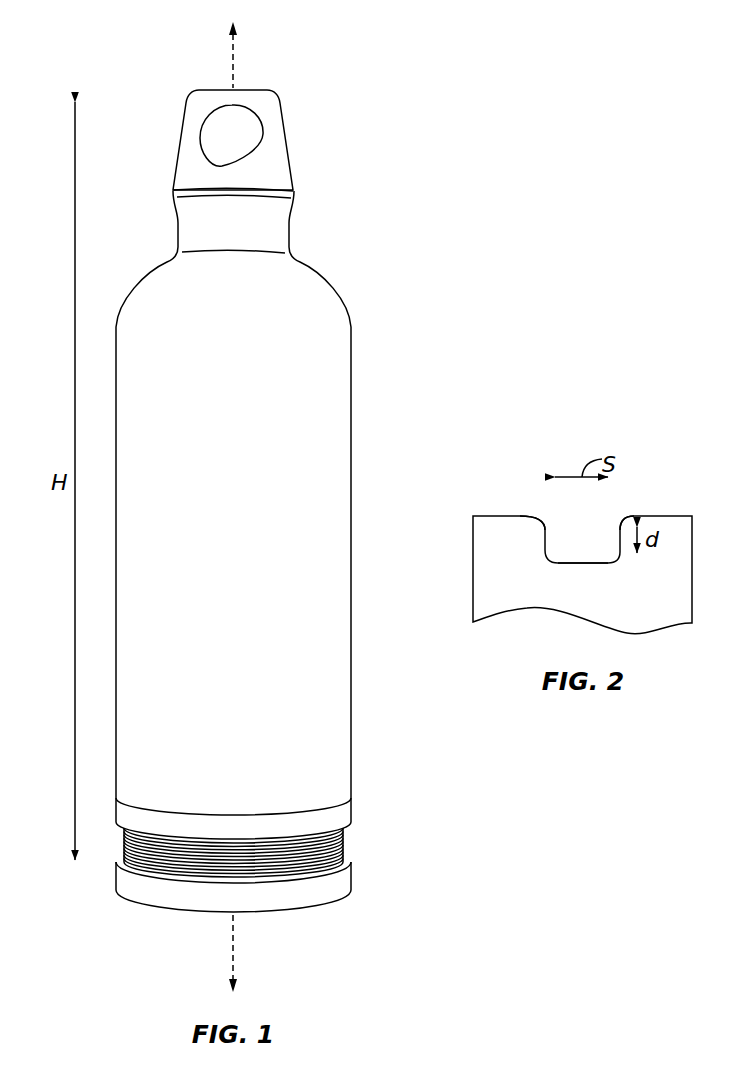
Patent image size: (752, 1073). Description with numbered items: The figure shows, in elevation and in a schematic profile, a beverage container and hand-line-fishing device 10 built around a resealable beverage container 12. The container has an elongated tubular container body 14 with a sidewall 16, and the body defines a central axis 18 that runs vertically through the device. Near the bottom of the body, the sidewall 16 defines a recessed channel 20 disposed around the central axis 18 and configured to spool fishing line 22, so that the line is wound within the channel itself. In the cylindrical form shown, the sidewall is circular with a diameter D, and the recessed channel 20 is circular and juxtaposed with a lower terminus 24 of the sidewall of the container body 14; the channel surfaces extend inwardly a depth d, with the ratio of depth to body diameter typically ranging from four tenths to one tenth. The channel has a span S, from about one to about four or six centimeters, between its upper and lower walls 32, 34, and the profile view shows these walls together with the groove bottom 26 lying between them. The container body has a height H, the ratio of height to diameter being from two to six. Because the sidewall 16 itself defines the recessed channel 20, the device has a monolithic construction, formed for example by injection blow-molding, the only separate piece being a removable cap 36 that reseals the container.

In FIG. 1, the beverage container and hand-line-fishing device 10 is at (239, 507).
In FIG. 1, the resealable beverage container 12 is at (318, 262).
In FIG. 1, the container body 14 is at (271, 562).
In FIG. 1, the sidewall 16 is at (352, 572).
In FIG. 1, the central axis 18 is at (237, 72).
In FIG. 1, the recessed channel 20 is at (230, 869).
In FIG. 2, the recessed channel 20 is at (578, 552).
In FIG. 1, the fishing line 22 is at (353, 840).
In FIG. 1, the lower terminus 24 is at (256, 802).
In FIG. 2, the groove bottom surface 26 is at (572, 565).
In FIG. 1, the upper wall 32 is at (116, 806).
In FIG. 2, the upper wall 32 is at (614, 537).
In FIG. 1, the lower wall 34 is at (116, 872).
In FIG. 2, the lower wall 34 is at (545, 522).
In FIG. 1, the removable cap 36 is at (287, 140).